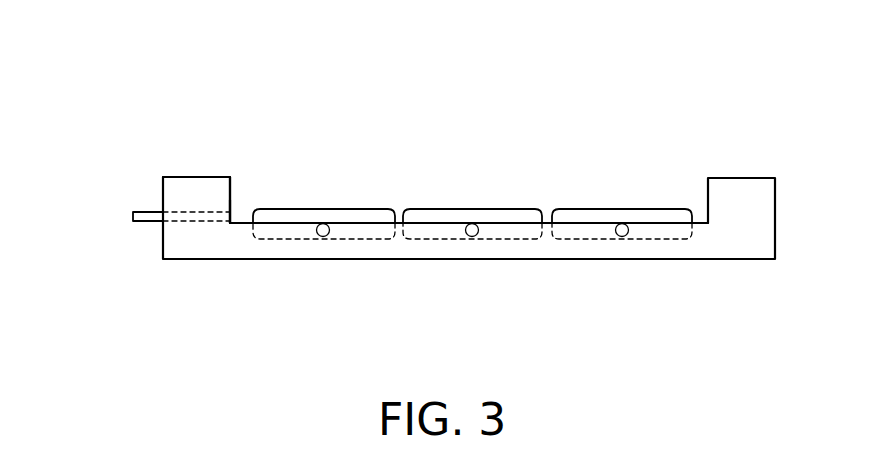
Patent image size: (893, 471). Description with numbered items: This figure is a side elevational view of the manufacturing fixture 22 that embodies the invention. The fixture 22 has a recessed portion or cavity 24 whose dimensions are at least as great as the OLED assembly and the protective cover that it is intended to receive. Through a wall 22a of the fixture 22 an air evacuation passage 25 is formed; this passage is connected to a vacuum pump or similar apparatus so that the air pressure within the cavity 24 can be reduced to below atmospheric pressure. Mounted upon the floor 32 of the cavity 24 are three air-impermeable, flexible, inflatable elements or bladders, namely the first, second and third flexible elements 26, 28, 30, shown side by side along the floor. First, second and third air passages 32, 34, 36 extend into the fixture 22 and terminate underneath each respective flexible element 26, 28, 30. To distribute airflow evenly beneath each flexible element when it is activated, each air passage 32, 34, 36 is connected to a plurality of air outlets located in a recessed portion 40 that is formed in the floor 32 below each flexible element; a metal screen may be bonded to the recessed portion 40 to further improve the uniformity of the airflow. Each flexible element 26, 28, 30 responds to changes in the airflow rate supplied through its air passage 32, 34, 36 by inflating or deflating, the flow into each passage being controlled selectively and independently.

The manufacturing fixture 22 is at (440, 116).
The wall 22a is at (232, 203).
The cavity 24 is at (253, 185).
The air evacuation passage 25 is at (185, 212).
The flexible element 26 is at (332, 217).
The flexible element 28 is at (481, 215).
The flexible element 30 is at (622, 220).
The first air passage 32 is at (323, 237).
The second air passage 34 is at (470, 237).
The third air passage 36 is at (620, 237).
The recessed portion 40 is at (280, 232).